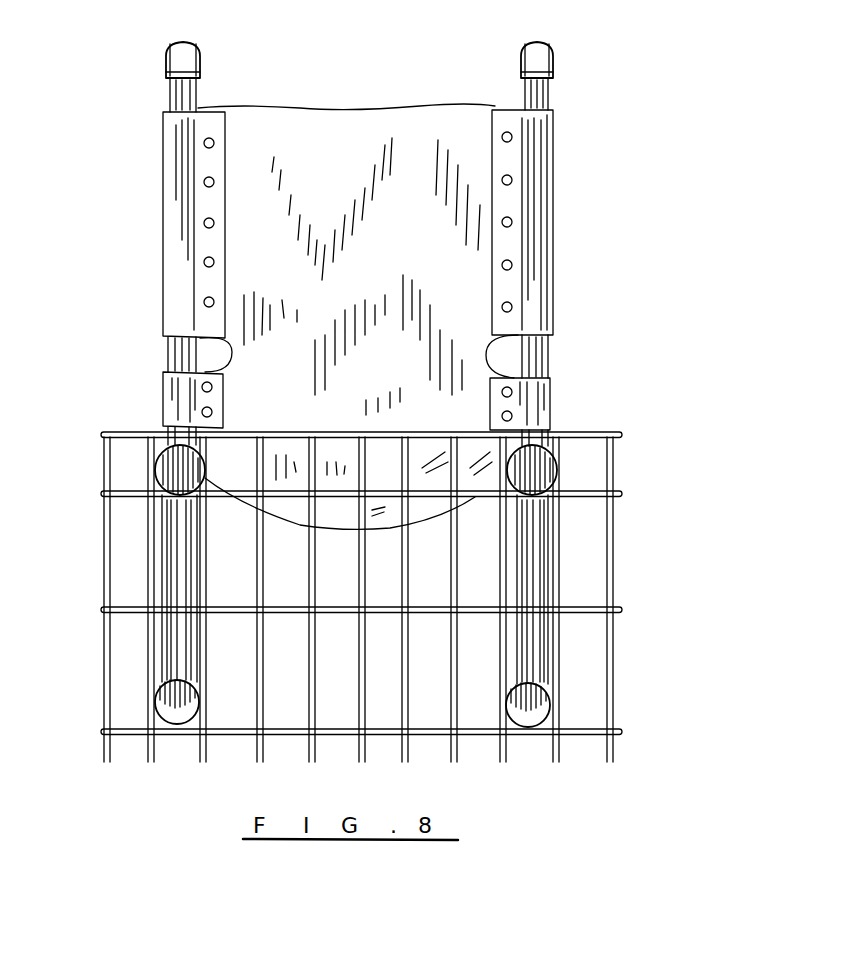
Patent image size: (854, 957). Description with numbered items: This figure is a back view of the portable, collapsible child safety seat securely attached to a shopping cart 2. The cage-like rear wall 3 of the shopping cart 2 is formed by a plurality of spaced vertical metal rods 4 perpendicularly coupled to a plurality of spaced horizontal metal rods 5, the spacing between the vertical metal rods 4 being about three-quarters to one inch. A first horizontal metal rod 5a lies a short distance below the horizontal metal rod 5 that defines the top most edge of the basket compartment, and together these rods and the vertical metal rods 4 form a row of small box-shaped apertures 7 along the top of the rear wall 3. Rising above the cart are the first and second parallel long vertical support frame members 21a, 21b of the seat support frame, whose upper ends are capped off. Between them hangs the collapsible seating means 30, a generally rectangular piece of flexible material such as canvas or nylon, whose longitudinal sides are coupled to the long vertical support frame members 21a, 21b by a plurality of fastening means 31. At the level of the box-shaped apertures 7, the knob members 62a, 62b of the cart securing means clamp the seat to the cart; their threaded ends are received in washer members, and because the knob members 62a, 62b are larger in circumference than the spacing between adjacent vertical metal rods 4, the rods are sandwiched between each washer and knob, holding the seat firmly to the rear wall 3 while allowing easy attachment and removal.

The shopping cart 2 is at (650, 568).
The cage-like rear wall 3 is at (568, 650).
The vertical metal rods 4 is at (150, 685).
The horizontal metal rods 5 is at (101, 610).
The first horizontal metal rod 5a is at (101, 494).
The box-shaped apertures 7 is at (230, 465).
The first parallel long vertical support frame member 21a is at (536, 93).
The second parallel long vertical support frame member 21b is at (178, 100).
The collapsible seating means 30 is at (361, 150).
The fastening means 31 is at (515, 190).
The knob member 62a is at (540, 458).
The knob member 62b is at (175, 468).